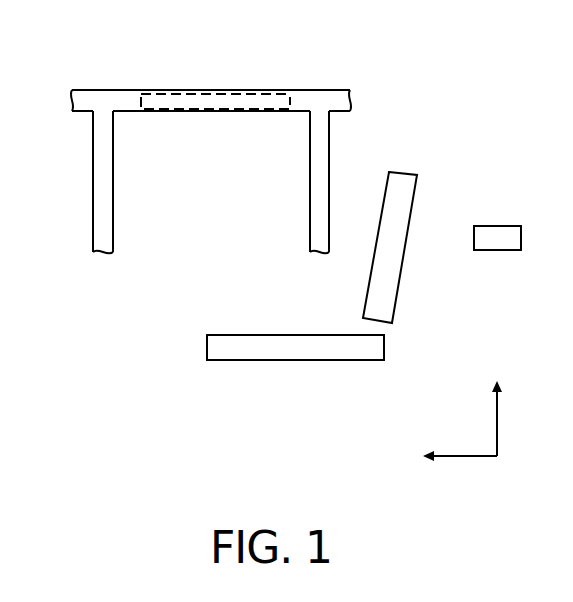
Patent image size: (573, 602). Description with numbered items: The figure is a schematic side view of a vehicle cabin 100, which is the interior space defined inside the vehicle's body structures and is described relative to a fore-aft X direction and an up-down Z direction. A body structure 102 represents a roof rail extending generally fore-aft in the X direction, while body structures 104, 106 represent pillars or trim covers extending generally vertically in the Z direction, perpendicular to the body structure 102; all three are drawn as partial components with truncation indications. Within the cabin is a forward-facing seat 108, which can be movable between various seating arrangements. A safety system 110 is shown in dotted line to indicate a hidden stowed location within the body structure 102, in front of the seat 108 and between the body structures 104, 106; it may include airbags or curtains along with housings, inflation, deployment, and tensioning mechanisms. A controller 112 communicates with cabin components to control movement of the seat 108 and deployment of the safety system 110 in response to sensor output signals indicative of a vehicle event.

The vehicle cabin 100 is at (232, 237).
The body structure 102 is at (110, 90).
The body structure 104 is at (93, 190).
The body structure 106 is at (310, 189).
The seat 108 is at (384, 348).
The safety system 110 is at (216, 93).
The controller 112 is at (497, 250).